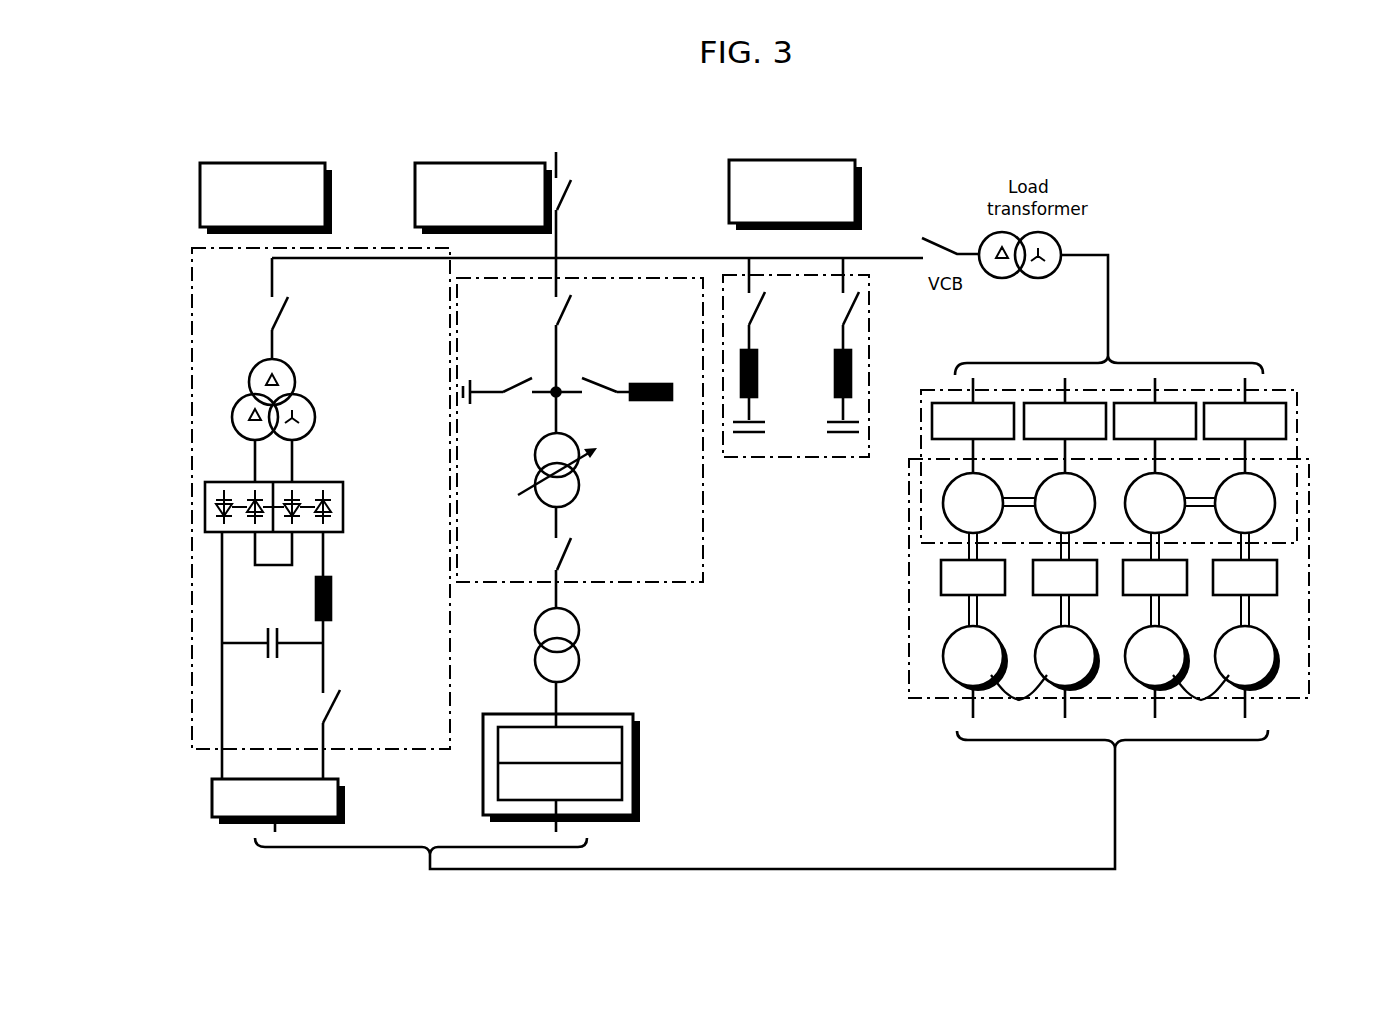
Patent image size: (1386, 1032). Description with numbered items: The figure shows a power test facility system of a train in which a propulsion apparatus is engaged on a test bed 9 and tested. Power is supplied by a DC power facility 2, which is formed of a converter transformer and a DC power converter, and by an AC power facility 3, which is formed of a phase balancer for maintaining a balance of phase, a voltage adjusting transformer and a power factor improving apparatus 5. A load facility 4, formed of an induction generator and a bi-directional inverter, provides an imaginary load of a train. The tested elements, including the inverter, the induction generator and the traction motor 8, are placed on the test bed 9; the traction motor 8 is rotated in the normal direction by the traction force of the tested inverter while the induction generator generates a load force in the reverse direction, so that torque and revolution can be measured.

The DC power facility 2 is at (262, 162).
The AC power facility 3 is at (480, 162).
The power factor improving apparatus 5 is at (795, 160).
The load facility 4 is at (1297, 396).
The test bed 9 is at (1309, 583).
The traction motor 8 is at (1110, 706).